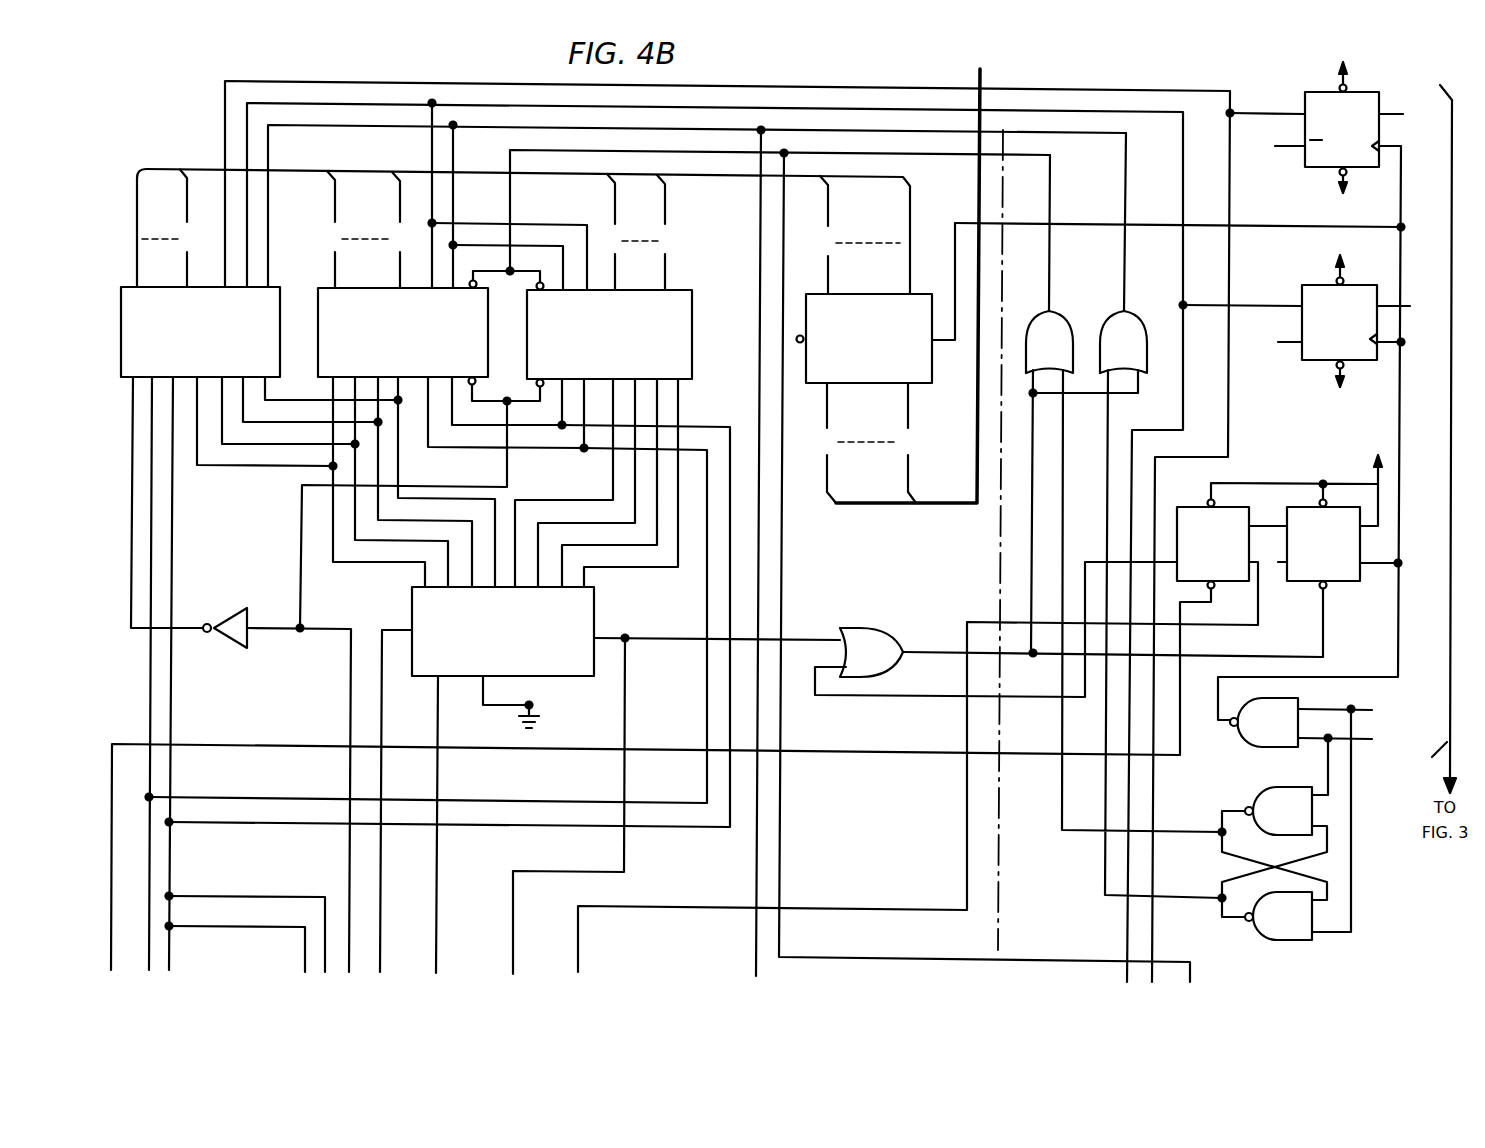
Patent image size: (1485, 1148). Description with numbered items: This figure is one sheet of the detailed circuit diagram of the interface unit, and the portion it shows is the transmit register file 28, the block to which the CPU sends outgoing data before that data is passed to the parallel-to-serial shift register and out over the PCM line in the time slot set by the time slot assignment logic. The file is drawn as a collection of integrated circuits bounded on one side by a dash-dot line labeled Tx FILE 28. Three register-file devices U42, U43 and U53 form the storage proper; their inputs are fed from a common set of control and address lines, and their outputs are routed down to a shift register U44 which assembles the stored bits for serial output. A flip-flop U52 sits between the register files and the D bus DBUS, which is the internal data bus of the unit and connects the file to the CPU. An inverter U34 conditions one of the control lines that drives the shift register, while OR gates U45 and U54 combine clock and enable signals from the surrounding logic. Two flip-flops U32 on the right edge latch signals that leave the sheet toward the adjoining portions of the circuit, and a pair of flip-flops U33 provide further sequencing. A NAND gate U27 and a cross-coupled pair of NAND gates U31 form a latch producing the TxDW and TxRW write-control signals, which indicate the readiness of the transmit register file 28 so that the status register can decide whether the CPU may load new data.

The transmit register file 28 is at (1037, 540).
The register file U42 is at (513, 273).
The register file U43 is at (401, 278).
The register file U53 is at (609, 280).
The flip flop U52 is at (887, 339).
The shift register U44 is at (611, 657).
The inverter U34 is at (241, 674).
The OR gate U54 is at (1069, 629).
The OR gates U45 is at (1124, 515).
The flip flops U32 is at (1308, 381).
The flip flops U33 is at (754, 703).
The NAND gate U27 is at (1329, 815).
The NAND gates U31 is at (1273, 863).
The D bus DBUS is at (934, 273).